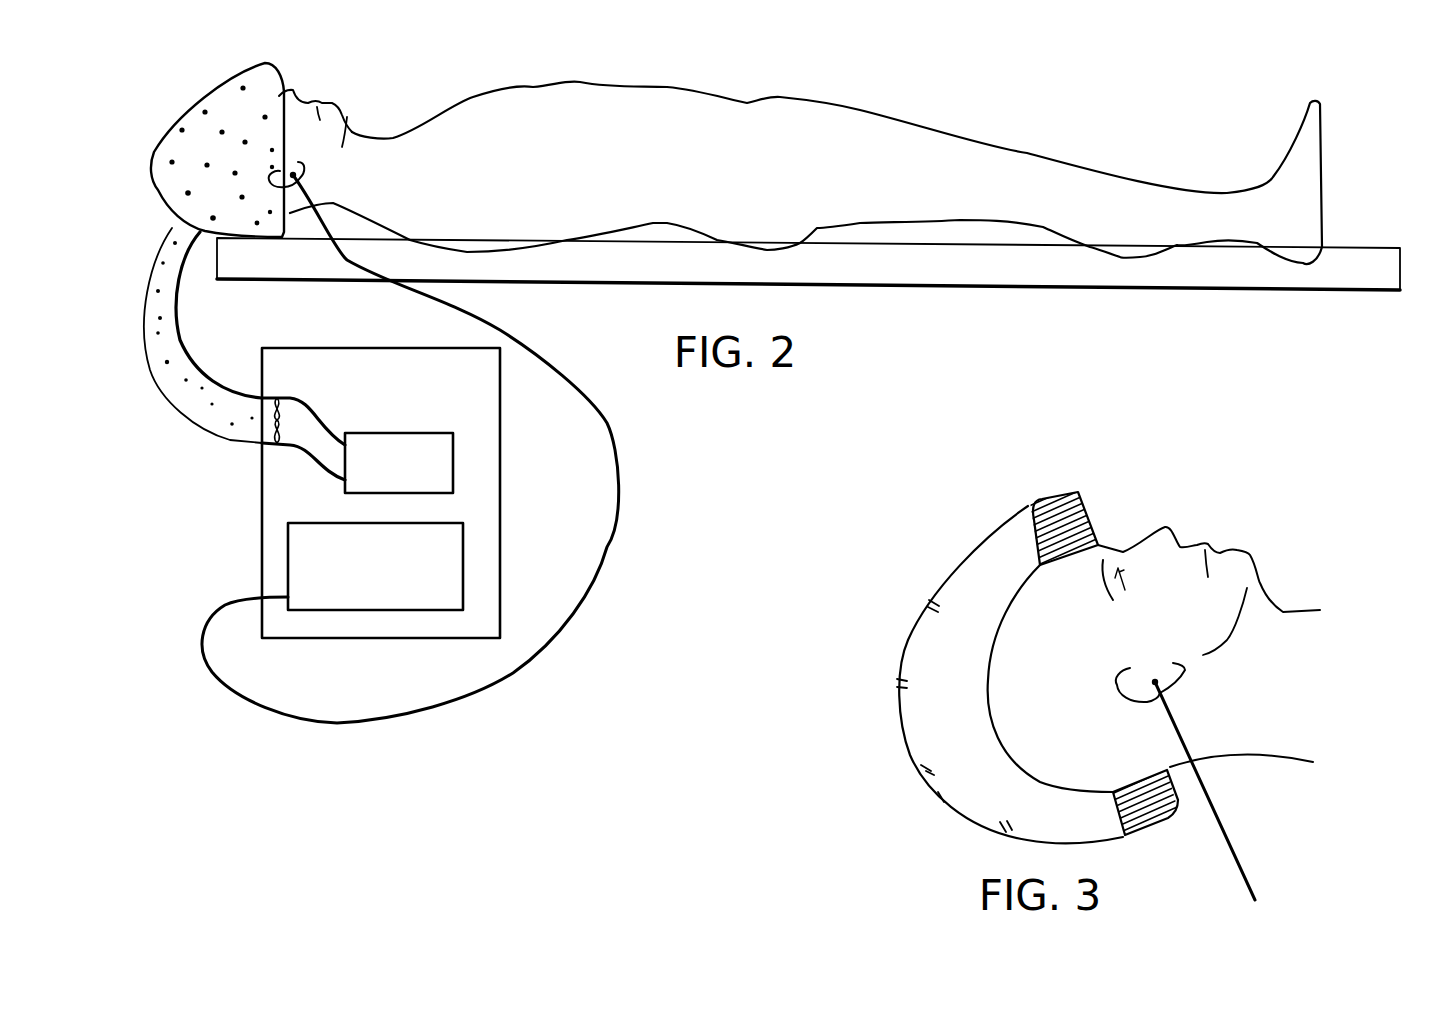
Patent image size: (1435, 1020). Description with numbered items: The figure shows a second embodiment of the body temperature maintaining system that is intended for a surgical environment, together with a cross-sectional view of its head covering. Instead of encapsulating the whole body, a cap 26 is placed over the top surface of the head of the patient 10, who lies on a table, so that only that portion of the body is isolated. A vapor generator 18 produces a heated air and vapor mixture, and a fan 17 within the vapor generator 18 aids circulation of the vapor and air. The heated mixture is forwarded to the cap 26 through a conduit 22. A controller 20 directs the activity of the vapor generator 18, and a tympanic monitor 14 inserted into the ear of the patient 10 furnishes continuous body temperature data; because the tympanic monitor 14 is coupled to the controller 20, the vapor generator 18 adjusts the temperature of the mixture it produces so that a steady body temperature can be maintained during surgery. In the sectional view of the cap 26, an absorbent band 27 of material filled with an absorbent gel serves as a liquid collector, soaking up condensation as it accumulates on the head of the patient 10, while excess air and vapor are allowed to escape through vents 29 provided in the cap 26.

In FIG. 2, the patient 10 is at (515, 107).
In FIG. 3, the patient 10 is at (1255, 735).
In FIG. 2, the tympanic monitor 14 is at (297, 167).
In FIG. 3, the tympanic monitor 14 is at (1155, 682).
In FIG. 2, the fan 17 is at (263, 437).
In FIG. 2, the vapor generator 18 is at (452, 483).
In FIG. 2, the controller 20 is at (395, 600).
In FIG. 2, the conduit 22 is at (172, 393).
In FIG. 2, the cap 26 is at (162, 193).
In FIG. 3, the cap 26 is at (963, 788).
In FIG. 3, the absorbent band 27 is at (1080, 528).
In FIG. 3, the vents 29 is at (933, 603).